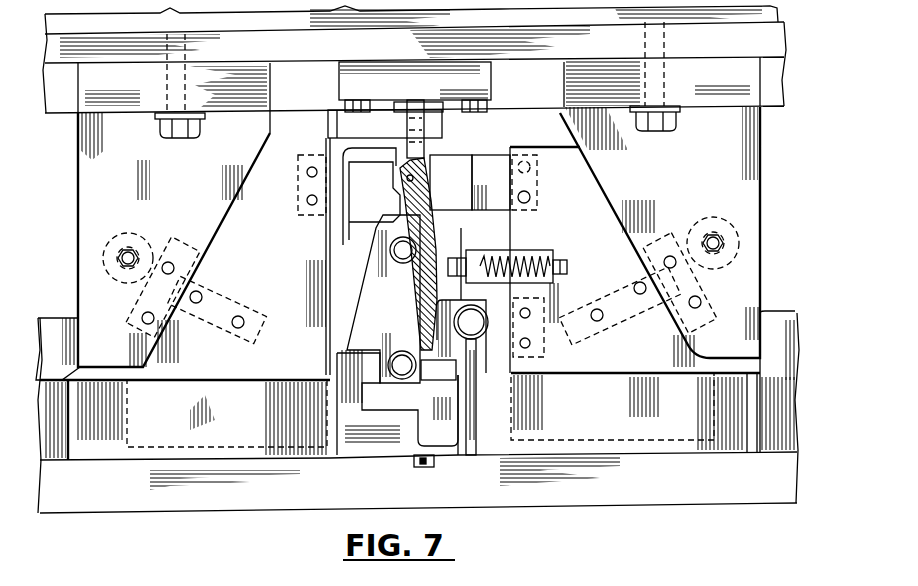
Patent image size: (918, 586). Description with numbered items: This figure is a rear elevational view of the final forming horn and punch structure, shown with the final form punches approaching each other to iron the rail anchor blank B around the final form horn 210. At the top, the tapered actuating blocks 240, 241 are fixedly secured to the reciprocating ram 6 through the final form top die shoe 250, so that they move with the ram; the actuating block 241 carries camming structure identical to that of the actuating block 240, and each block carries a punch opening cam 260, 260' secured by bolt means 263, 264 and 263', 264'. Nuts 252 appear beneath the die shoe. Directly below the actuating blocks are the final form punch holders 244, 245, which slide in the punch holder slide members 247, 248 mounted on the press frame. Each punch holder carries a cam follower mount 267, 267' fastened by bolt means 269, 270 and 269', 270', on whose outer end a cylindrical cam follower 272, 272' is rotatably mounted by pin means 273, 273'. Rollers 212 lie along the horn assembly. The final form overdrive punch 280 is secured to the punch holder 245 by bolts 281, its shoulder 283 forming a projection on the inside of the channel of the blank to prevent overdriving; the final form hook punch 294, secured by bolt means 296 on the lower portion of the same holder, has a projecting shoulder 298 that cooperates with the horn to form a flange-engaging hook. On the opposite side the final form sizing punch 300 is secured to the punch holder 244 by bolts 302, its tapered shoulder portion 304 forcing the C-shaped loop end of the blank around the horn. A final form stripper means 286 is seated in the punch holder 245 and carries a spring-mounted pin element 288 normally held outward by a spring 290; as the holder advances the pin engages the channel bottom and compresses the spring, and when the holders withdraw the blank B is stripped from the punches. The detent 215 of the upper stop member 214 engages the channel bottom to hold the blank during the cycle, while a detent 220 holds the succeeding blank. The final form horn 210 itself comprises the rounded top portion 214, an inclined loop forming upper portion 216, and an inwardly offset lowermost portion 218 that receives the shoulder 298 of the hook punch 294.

The reciprocating ram 6 is at (414, 59).
The final form top die shoe 250 is at (414, 71).
The nut and bolt 252 is at (158, 132).
The final form punch holder 244 is at (263, 168).
The final form punch holder 245 is at (549, 152).
The tapered actuating block 240 is at (181, 246).
The tapered actuating block 241 is at (635, 240).
The rollers 212 is at (338, 112).
The upper stop member / rounded top portion 214 is at (418, 112).
The detent 215 is at (432, 152).
The inclined loop forming upper portion 216 is at (430, 232).
The inwardly offset lowermost portion 218 is at (425, 345).
The detent 220 is at (403, 168).
The final form overdrive punch 280 is at (497, 155).
The bolts 281 is at (537, 196).
The shoulder 283 is at (491, 182).
The final form stripper means 286 is at (553, 258).
The spring-mounted pin element 288 is at (462, 290).
The spring 290 is at (519, 252).
The final form hook punch 294 is at (493, 343).
The bolt means 296 is at (544, 357).
The projecting shoulder 298 is at (439, 370).
The final form sizing punch 300 is at (340, 224).
The bolts 302 is at (298, 182).
The tapered shoulder portion 304 is at (352, 212).
The final form horn 210 is at (381, 302).
The punch holder slide member 247 is at (103, 448).
The punch holder slide member 248 is at (731, 448).
The punch opening cam 260 is at (168, 239).
The bolt means 263 is at (118, 329).
The bolt means 264 is at (169, 278).
The cam follower mount 267 is at (214, 342).
The bolt means 269 is at (224, 283).
The bolt means 270 is at (236, 309).
The cylindrical cam follower 272 is at (126, 242).
The pin means 273 is at (88, 254).
The punch opening cam 260' is at (712, 278).
The bolt means 263' is at (718, 323).
The bolt means 264' is at (680, 262).
The cam follower mount 267' is at (610, 287).
The bolt means 269' is at (651, 311).
The bolt means 270' is at (619, 311).
The cylindrical cam follower 272' is at (718, 228).
The pin means 273' is at (752, 234).
The rail anchor blank B is at (351, 125).